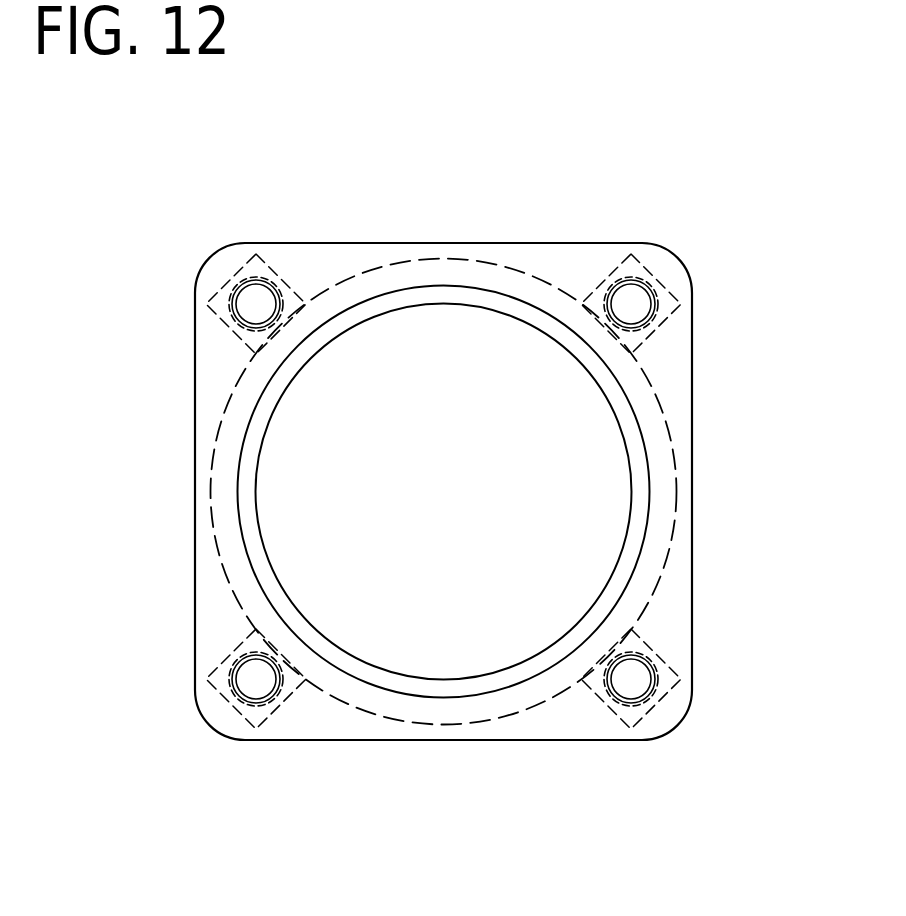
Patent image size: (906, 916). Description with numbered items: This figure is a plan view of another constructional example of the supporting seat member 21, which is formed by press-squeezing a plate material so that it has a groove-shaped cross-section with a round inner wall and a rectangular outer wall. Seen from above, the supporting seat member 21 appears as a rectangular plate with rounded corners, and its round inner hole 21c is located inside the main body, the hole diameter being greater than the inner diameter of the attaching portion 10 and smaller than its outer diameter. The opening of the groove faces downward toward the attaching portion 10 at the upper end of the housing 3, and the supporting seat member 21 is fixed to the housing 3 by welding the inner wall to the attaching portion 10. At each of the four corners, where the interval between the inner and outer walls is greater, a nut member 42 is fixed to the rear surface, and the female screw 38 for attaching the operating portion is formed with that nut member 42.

The housing 3 is at (676, 530).
The attaching portion 10 is at (393, 303).
The supporting seat member 21 is at (523, 252).
The inner hole 21c is at (634, 420).
The female screw 38 is at (633, 293).
The nut member 42 is at (670, 300).